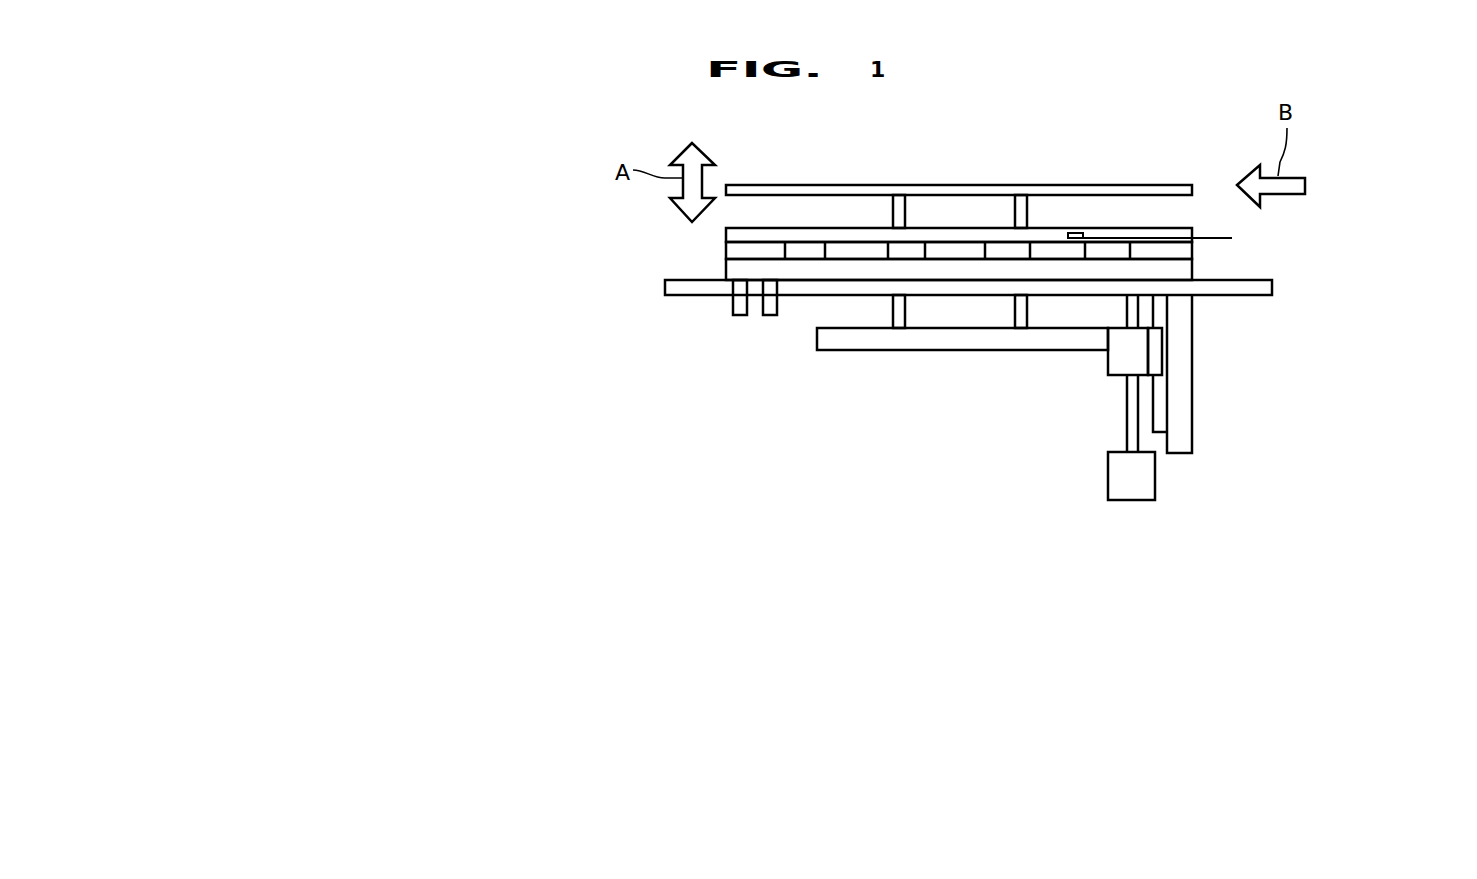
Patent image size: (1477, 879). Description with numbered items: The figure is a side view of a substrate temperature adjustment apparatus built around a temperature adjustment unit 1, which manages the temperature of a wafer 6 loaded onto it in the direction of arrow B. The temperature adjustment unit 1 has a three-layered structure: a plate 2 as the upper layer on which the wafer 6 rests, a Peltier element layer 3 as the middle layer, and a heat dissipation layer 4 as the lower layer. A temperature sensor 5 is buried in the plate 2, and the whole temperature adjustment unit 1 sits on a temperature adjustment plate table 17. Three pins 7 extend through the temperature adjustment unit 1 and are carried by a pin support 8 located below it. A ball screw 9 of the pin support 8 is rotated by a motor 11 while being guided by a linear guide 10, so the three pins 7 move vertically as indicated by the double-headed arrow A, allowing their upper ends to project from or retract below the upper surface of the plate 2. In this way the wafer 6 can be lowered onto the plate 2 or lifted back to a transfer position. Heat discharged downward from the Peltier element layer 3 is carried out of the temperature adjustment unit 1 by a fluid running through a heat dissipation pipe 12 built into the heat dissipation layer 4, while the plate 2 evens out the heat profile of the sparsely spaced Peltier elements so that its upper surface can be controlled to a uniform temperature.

The temperature adjustment unit 1 is at (396, 314).
The plate 2 is at (725, 233).
The Peltier element layer 3 is at (725, 255).
The heat dissipation layer 4 is at (725, 268).
The temperature sensor 5 is at (1077, 232).
The wafer 6 is at (1068, 185).
The three pins 7 is at (893, 212).
The pin support 8 is at (940, 350).
The ball screw 9 is at (1138, 398).
The linear guide 10 is at (1162, 356).
The motor 11 is at (1155, 485).
The heat dissipation pipe 12 is at (740, 315).
The temperature adjustment plate table 17 is at (677, 295).